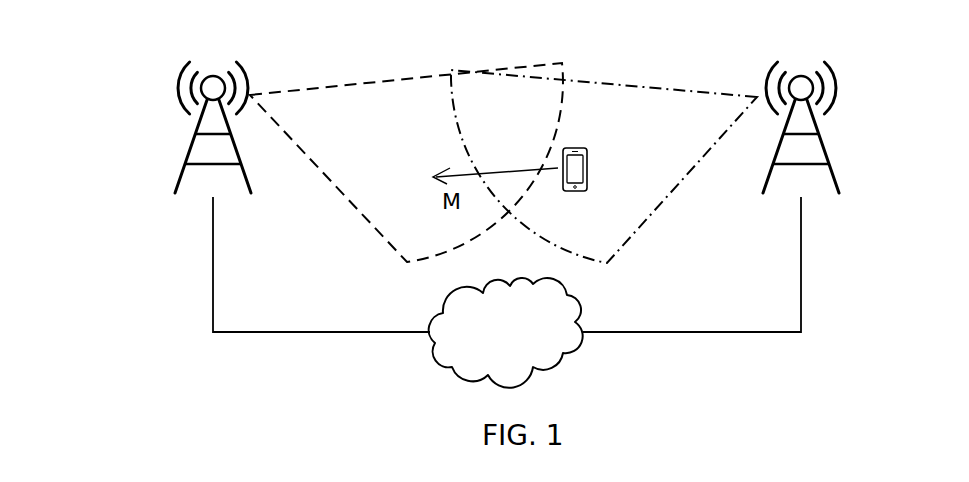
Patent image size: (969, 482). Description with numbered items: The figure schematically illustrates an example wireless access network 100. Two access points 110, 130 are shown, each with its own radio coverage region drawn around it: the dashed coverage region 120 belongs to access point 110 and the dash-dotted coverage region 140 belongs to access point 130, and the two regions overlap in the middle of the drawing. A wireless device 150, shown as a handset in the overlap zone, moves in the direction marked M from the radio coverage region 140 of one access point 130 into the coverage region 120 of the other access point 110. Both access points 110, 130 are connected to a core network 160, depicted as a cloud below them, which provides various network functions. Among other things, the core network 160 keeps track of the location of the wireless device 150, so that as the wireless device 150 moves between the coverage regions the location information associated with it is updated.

The wireless access network 100 is at (96, 45).
The access point 110 is at (192, 148).
The radio coverage region 120 is at (417, 137).
The access point 130 is at (820, 128).
The radio coverage region 140 is at (633, 130).
The wireless device 150 is at (588, 167).
The core network 160 is at (506, 333).